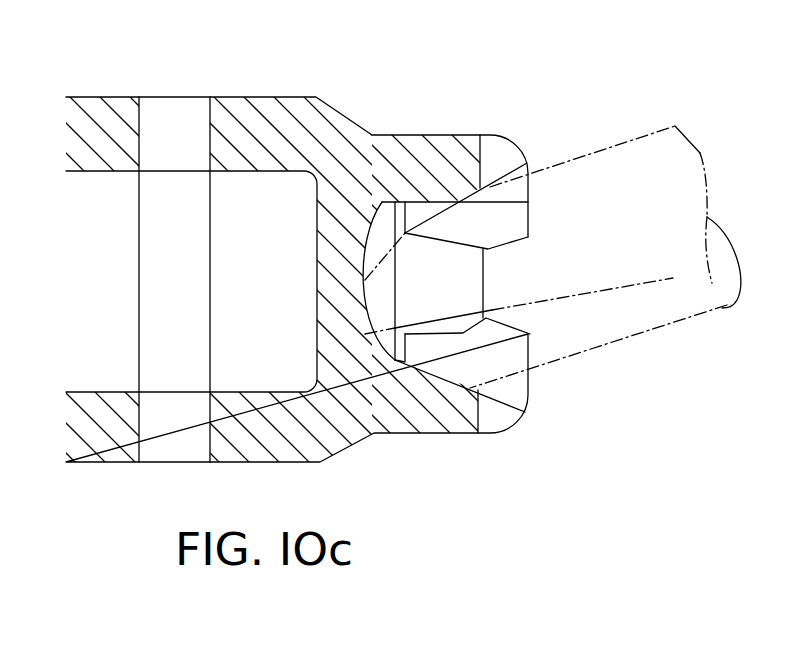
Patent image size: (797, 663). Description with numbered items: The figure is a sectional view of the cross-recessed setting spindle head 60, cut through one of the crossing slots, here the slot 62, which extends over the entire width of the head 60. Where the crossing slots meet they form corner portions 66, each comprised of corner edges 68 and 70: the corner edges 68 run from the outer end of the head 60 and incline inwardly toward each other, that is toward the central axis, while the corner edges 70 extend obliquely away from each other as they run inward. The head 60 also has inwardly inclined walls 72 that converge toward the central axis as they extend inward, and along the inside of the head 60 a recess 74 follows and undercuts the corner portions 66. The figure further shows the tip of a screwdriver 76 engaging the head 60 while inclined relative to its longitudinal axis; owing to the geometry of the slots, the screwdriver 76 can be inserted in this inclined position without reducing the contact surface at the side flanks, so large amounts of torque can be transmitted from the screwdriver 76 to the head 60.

The cross-recessed setting spindle head 60 is at (418, 135).
The slot 62 is at (498, 408).
The corner portion 66 is at (463, 248).
The corner edge 68 is at (483, 238).
The corner edge 70 is at (450, 242).
The inwardly inclined wall 72 is at (528, 202).
The recess 74 is at (383, 237).
The screwdriver 76 is at (637, 138).